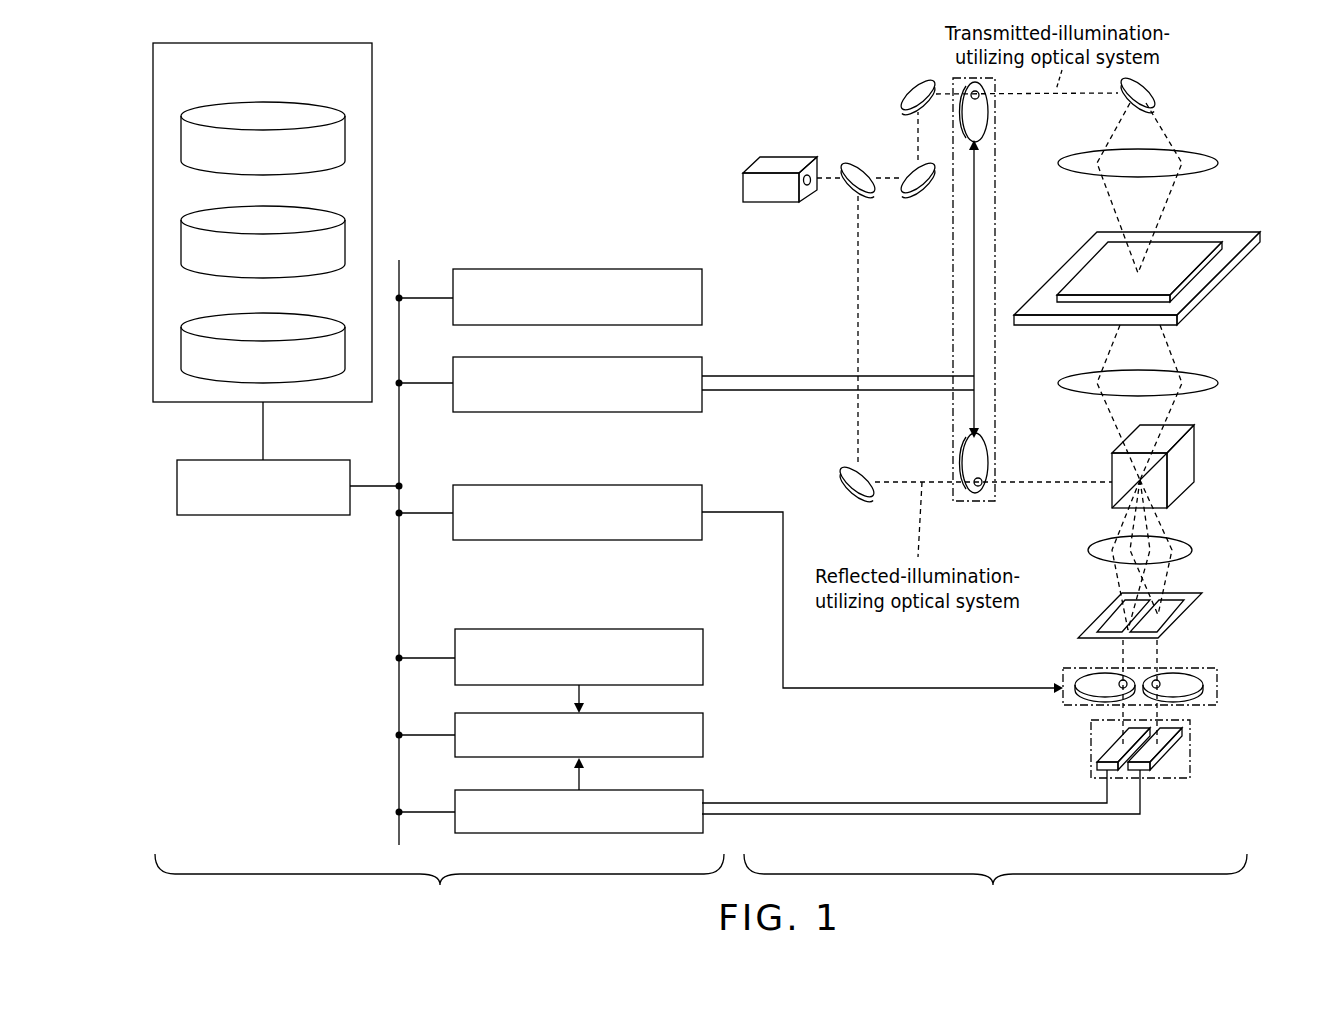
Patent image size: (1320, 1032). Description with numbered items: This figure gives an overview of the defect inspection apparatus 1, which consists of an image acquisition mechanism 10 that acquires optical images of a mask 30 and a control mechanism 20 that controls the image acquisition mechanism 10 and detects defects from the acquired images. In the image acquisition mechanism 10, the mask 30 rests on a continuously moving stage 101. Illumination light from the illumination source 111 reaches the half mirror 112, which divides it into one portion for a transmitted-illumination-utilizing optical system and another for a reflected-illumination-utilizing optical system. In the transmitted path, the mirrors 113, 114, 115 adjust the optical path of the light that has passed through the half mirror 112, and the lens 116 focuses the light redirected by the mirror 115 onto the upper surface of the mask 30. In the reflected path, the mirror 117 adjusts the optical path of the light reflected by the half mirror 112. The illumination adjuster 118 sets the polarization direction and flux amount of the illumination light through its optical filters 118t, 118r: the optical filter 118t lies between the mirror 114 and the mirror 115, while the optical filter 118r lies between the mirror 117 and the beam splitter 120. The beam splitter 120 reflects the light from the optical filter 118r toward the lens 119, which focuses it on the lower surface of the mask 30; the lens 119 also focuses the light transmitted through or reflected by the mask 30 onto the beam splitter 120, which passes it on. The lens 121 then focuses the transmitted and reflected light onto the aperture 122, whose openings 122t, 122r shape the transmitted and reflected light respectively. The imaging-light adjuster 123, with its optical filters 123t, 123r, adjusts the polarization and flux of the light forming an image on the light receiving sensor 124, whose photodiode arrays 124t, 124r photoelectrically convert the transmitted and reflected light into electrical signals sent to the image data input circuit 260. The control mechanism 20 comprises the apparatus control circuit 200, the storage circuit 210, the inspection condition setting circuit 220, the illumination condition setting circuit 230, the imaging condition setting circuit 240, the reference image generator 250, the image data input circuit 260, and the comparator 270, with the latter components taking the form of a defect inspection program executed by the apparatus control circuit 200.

The defect inspection apparatus 1 is at (1268, 110).
The image acquisition mechanism 10 is at (995, 886).
The control mechanism 20 is at (439, 887).
The mask 30 is at (1180, 250).
The stage 101 is at (1232, 262).
The illumination source 111 is at (783, 159).
The half mirror 112 is at (854, 159).
The mirror 113 is at (918, 198).
The mirror 114 is at (898, 92).
The mirror 115 is at (1155, 85).
The lens 116 is at (1218, 160).
The mirror 117 is at (862, 502).
The illumination adjuster 118 is at (1007, 316).
The optical filter 118t is at (988, 118).
The optical filter 118r is at (988, 458).
The lens 119 is at (1218, 380).
The beam splitter 120 is at (1196, 460).
The lens 121 is at (1192, 548).
The aperture 122 is at (1132, 616).
The opening 122r is at (1103, 630).
The opening 122t is at (1150, 630).
The imaging-light adjuster 123 is at (1142, 701).
The optical filter 123r is at (1096, 701).
The optical filter 123t is at (1185, 700).
The light receiving sensor 124 is at (1139, 752).
The photodiode array 124r is at (1097, 766).
The photodiode array 124t is at (1153, 765).
The apparatus control circuit 200 is at (306, 458).
The storage circuit 210 is at (373, 121).
The inspection condition setting circuit 220 is at (666, 268).
The illumination condition setting circuit 230 is at (702, 358).
The imaging condition setting circuit 240 is at (702, 486).
The reference image generator 250 is at (703, 652).
The image data input circuit 260 is at (703, 792).
The comparator 270 is at (703, 732).